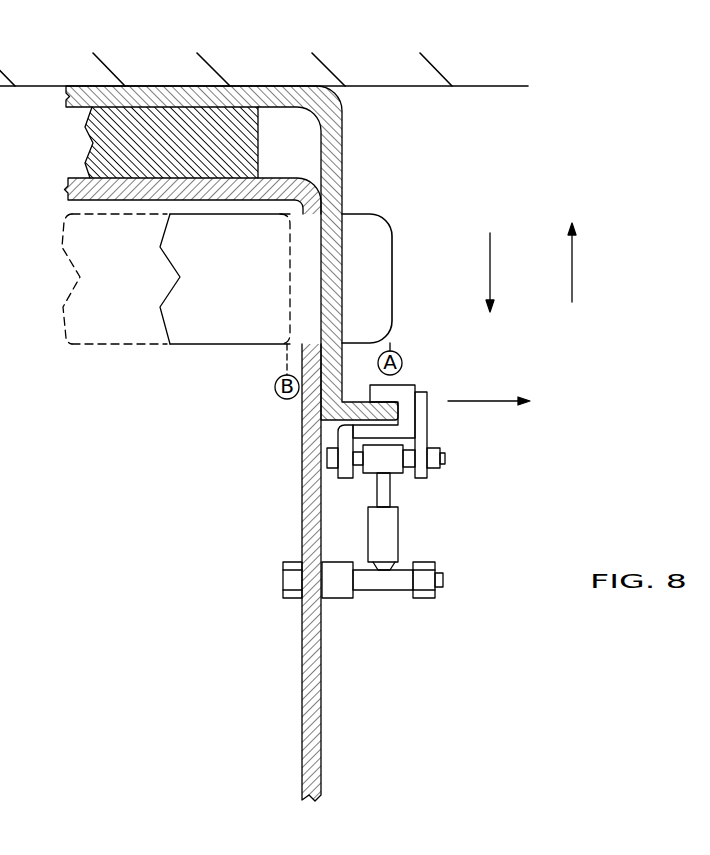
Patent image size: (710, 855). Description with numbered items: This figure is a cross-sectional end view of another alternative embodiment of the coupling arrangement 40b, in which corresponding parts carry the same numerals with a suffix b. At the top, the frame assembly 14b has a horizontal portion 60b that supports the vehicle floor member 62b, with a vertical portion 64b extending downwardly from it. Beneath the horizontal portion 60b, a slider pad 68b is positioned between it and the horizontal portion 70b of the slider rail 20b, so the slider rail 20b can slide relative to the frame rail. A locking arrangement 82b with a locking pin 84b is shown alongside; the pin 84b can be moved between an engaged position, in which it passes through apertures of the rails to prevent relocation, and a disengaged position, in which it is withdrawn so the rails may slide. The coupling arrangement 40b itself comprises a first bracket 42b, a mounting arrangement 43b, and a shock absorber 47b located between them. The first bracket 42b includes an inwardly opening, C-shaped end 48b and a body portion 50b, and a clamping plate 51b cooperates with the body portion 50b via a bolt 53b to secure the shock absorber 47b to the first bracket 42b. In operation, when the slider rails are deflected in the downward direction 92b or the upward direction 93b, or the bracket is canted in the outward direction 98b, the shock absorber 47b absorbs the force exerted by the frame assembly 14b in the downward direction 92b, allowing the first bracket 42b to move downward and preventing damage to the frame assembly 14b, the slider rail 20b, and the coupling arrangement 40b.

The frame assembly 14b is at (349, 112).
The slider rail 20b is at (307, 698).
The coupling arrangement 40b is at (563, 362).
The first bracket 42b is at (410, 412).
The mounting arrangement 43b is at (352, 607).
The shock absorber 47b is at (412, 523).
The C-shaped end 48b is at (400, 390).
The body portion 50b is at (340, 440).
The clamping plate 51b is at (420, 425).
The bolt 53b is at (443, 463).
The horizontal portion of vehicle frame rail 60b is at (172, 87).
The vehicle floor member 62b is at (475, 86).
The vertical portion of vehicle frame rail 64b is at (337, 175).
The slider pad 68b is at (243, 160).
The horizontal portion of slider rail 70b is at (78, 178).
The locking arrangement 82b is at (393, 230).
The locking pin 84b is at (377, 279).
The downward direction 92b is at (492, 272).
The upward direction 93b is at (575, 272).
The outward direction 98b is at (485, 399).